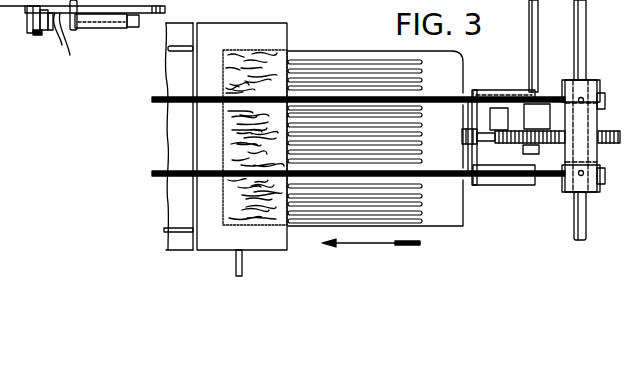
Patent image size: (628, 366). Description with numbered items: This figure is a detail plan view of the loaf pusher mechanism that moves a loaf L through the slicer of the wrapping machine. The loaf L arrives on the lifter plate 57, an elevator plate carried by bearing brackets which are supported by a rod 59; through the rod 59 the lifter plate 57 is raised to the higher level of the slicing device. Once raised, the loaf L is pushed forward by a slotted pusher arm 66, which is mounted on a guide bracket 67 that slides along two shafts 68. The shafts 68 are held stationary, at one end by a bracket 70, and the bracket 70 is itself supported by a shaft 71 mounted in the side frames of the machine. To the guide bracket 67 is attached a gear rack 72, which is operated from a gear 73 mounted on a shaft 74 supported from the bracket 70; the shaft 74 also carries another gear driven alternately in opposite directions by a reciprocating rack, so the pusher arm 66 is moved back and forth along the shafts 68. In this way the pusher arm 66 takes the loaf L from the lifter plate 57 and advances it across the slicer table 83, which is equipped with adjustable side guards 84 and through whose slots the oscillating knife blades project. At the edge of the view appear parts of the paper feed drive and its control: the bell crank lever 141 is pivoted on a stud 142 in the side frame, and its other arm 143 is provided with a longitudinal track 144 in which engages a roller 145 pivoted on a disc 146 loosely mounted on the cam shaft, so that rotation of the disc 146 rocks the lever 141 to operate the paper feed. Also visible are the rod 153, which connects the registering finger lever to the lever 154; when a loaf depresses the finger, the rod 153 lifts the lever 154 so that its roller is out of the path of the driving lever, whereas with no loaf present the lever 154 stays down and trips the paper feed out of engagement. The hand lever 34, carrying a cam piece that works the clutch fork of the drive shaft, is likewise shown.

The hand lever 34 is at (74, 31).
The lifter plate 57 is at (288, 250).
The rod 59 is at (236, 266).
The slotted pusher arm 66 is at (462, 226).
The guide bracket 67 is at (488, 96).
The shafts 68 is at (152, 99).
The bracket 70 is at (592, 88).
The shaft 71 is at (588, 15).
The gear rack 72 is at (613, 131).
The gear 73 is at (513, 146).
The shaft 74 is at (529, 7).
The slicer table 83 is at (165, 248).
The adjustable side guards 84 is at (167, 55).
The bell crank lever 141 is at (24, 12).
The stud 142 is at (34, 37).
The arm 143 is at (28, 24).
The longitudinal track 144 is at (133, 27).
The roller 145 is at (79, 28).
The disc 146 is at (166, 12).
The rod 153 is at (55, 29).
The lever 154 is at (63, 52).
The loaf L is at (290, 58).